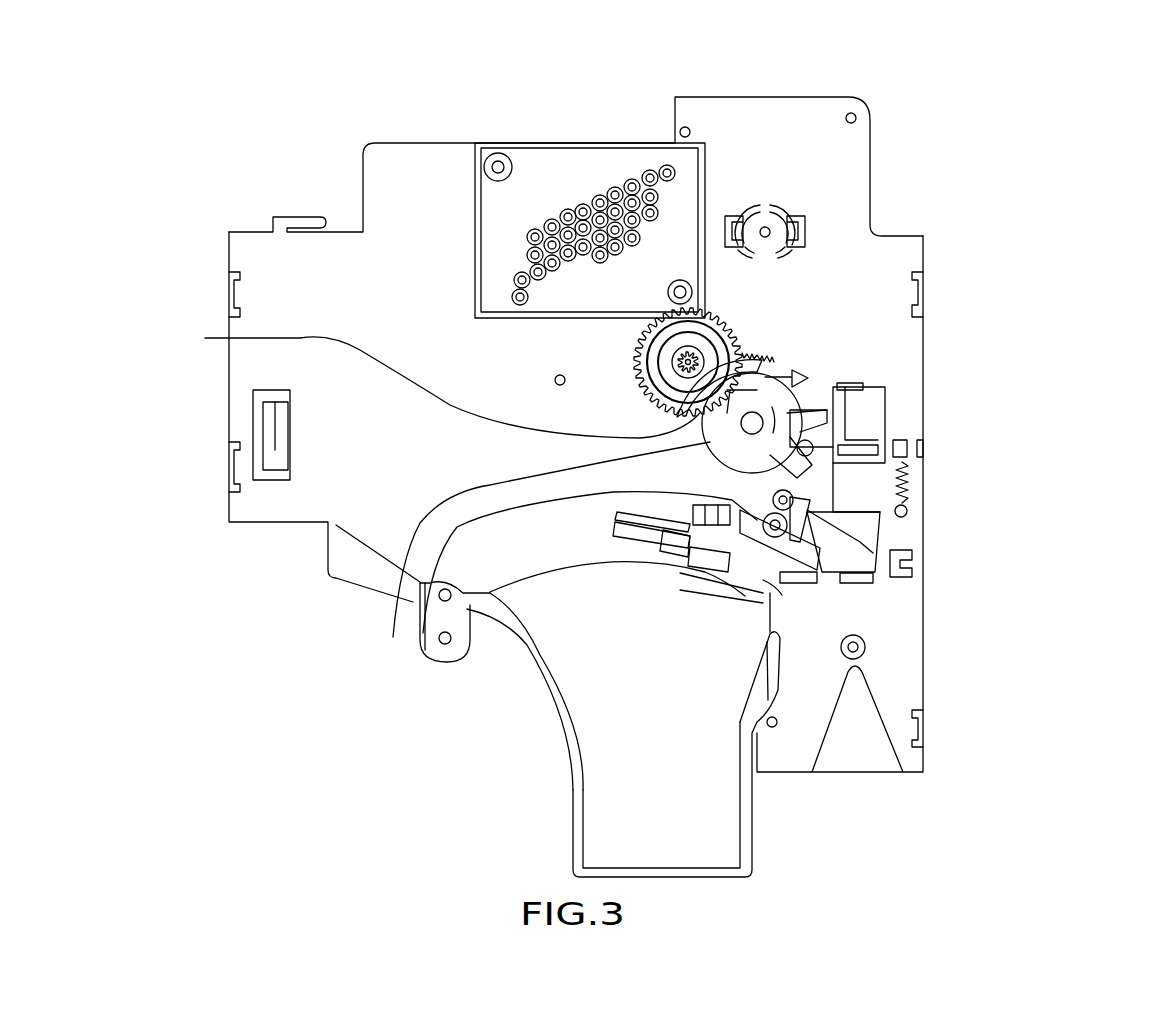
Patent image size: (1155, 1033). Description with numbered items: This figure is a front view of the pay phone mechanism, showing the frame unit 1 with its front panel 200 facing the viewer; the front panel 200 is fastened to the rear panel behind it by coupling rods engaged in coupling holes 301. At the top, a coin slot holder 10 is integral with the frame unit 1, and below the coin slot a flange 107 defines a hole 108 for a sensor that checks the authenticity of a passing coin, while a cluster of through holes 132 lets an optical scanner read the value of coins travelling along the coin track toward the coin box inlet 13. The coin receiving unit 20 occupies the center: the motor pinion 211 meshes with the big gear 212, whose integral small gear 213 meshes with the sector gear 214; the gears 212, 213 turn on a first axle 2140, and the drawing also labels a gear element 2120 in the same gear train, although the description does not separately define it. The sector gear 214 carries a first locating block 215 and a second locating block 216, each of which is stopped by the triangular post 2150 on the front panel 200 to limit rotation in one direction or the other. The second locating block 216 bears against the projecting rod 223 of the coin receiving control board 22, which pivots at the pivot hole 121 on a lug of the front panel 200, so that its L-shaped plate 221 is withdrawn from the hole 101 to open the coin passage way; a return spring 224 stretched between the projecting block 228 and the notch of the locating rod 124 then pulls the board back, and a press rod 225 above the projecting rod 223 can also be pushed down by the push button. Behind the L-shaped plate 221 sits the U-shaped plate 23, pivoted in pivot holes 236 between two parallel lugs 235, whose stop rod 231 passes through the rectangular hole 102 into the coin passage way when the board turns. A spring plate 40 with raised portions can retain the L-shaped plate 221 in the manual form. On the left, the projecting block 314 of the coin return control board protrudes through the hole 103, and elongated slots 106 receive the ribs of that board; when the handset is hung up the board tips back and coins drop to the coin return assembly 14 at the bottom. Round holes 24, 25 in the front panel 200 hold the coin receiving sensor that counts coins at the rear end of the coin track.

The frame unit 1 is at (608, 442).
The coin slot holder 10 is at (867, 123).
The coin box inlet 13 is at (880, 775).
The coin return assembly 14 is at (728, 798).
The coin receiving unit 20 is at (1005, 278).
The coin receiving control board 22 is at (950, 424).
The U-shaped plate 23 is at (855, 595).
The round hole 24 is at (853, 647).
The round hole 25 is at (509, 664).
The spring plate 40 is at (912, 543).
The hole 101 is at (890, 577).
The rectangular hole 102 is at (567, 665).
The hole 103 is at (283, 477).
The elongated slot 106 is at (680, 578).
The flange 107 is at (896, 208).
The hole 108 is at (732, 218).
The pivot hole 121 is at (900, 458).
The locating rod 124 is at (900, 517).
The through holes 132 is at (603, 200).
The front panel 200 is at (397, 158).
The pinion 211 is at (898, 352).
The big gear 212 is at (762, 330).
The small gear 213 is at (772, 357).
The sector gear 214 is at (870, 395).
The first locating block 215 is at (845, 400).
The second locating block 216 is at (910, 560).
The L-shaped plate 221 is at (807, 472).
The projecting rod 223 is at (875, 420).
The return spring 224 is at (910, 467).
The press rod 225 is at (852, 390).
The projecting block 228 is at (920, 458).
The stop rod 231 is at (663, 538).
The parallel lugs 235 is at (782, 590).
The pivot holes 236 is at (712, 540).
The coupling holes 301 is at (247, 523).
The projecting block 314 is at (270, 440).
The motor gear 2120 is at (740, 235).
The first axle 2140 is at (393, 637).
The triangular post 2150 is at (417, 377).